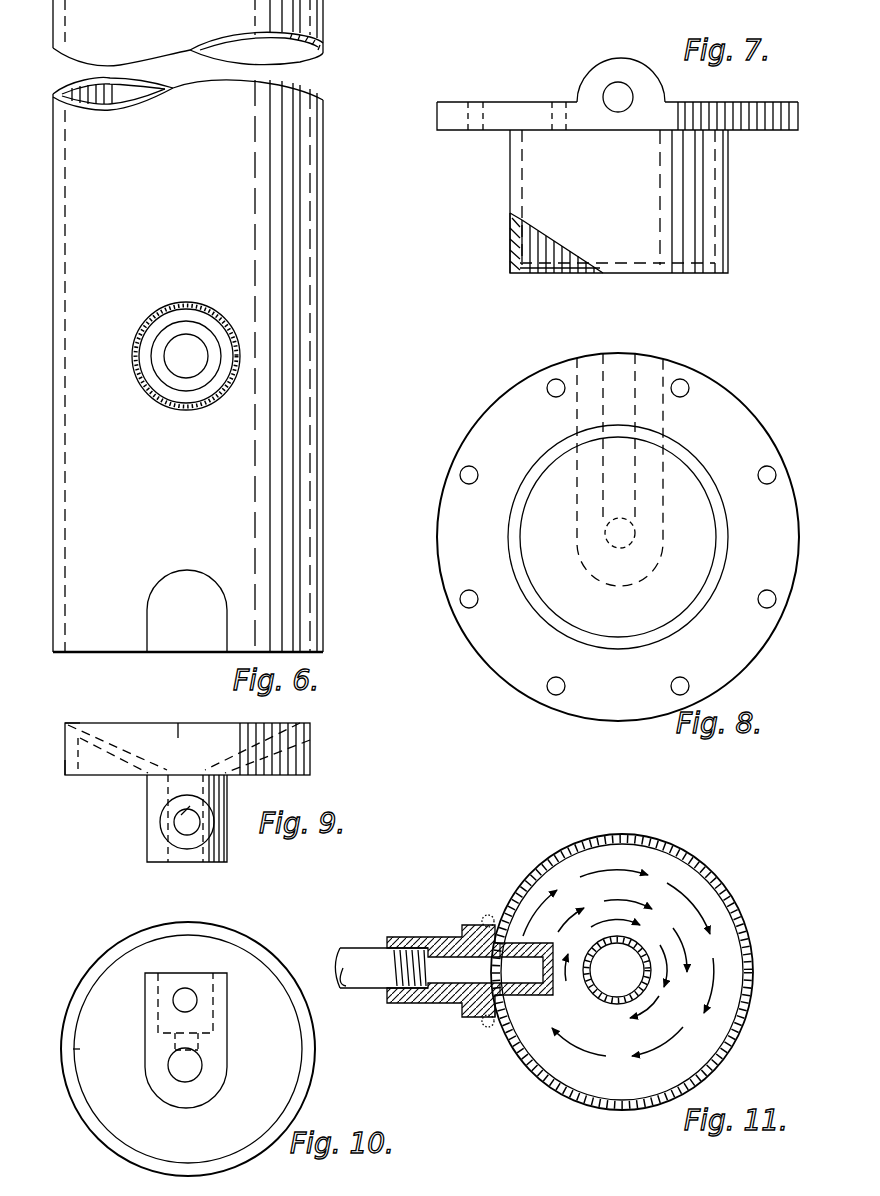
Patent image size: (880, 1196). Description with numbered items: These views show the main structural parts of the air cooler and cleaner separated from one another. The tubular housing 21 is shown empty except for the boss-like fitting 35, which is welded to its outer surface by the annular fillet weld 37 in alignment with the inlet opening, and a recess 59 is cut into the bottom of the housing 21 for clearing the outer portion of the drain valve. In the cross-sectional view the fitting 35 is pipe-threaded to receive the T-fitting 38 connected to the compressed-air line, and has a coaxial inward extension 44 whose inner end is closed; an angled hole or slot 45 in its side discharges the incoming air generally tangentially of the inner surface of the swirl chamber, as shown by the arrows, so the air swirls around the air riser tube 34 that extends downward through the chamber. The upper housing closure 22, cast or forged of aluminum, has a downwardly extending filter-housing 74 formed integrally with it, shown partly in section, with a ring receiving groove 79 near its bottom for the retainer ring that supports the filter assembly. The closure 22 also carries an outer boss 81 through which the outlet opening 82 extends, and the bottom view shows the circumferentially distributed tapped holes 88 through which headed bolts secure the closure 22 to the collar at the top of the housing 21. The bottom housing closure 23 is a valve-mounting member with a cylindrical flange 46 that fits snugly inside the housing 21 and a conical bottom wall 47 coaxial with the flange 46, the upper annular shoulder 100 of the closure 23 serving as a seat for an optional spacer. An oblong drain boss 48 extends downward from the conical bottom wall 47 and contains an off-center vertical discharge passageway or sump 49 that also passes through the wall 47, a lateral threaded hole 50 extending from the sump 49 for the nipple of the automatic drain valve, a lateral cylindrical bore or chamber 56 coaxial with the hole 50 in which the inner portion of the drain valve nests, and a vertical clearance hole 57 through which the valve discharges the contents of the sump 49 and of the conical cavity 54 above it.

In FIG. 6, the tubular housing 21 is at (374, 267).
In FIG. 10, the tubular housing 21 is at (90, 961).
In FIG. 11, the tubular housing 21 is at (794, 913).
In FIG. 7, the upper housing closure 22 is at (506, 100).
In FIG. 8, the upper housing closure 22 is at (491, 671).
In FIG. 9, the bottom housing closure 23 is at (312, 757).
In FIG. 11, the air riser tube 34 is at (616, 1004).
In FIG. 6, the boss-like fitting 35 is at (164, 362).
In FIG. 11, the boss-like fitting 35 is at (412, 937).
In FIG. 6, the annular fillet weld 37 is at (146, 398).
In FIG. 11, the annular fillet weld 37 is at (484, 916).
In FIG. 11, the T-fitting 38 is at (352, 948).
In FIG. 11, the coaxial inward extension 44 is at (503, 996).
In FIG. 11, the hole or slot 45 is at (512, 952).
In FIG. 9, the cylindrical flange 46 is at (72, 776).
In FIG. 10, the cylindrical flange 46 is at (72, 1078).
In FIG. 9, the conical bottom wall 47 is at (125, 738).
In FIG. 10, the conical bottom wall 47 is at (94, 1012).
In FIG. 9, the oblong drain boss 48 is at (228, 843).
In FIG. 10, the oblong drain boss 48 is at (229, 1037).
In FIG. 9, the vertical discharge passageway or sump 49 is at (165, 806).
In FIG. 10, the vertical discharge passageway or sump 49 is at (182, 1067).
In FIG. 9, the lateral threaded hole 50 is at (176, 832).
In FIG. 10, the lateral threaded hole 50 is at (198, 1046).
In FIG. 9, the conical cavity 54 is at (185, 730).
In FIG. 9, the lateral cylindrical bore or chamber 56 is at (190, 840).
In FIG. 10, the lateral cylindrical bore or chamber 56 is at (160, 995).
In FIG. 10, the vertical clearance hole 57 is at (190, 1001).
In FIG. 6, the recess 59 is at (222, 614).
In FIG. 7, the filter-housing 74 is at (729, 201).
In FIG. 8, the filter-housing 74 is at (728, 530).
In FIG. 7, the ring receiving groove 79 is at (575, 273).
In FIG. 7, the outer boss 81 is at (606, 70).
In FIG. 8, the outer boss 81 is at (664, 432).
In FIG. 7, the outlet opening 82 is at (612, 98).
In FIG. 8, the outlet opening 82 is at (604, 494).
In FIG. 8, the tapped holes 88 is at (684, 385).
In FIG. 9, the upper annular shoulder 100 is at (80, 723).